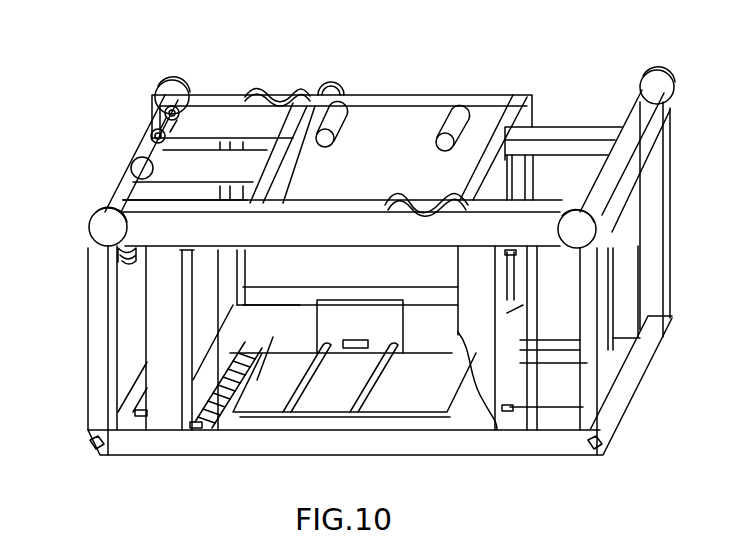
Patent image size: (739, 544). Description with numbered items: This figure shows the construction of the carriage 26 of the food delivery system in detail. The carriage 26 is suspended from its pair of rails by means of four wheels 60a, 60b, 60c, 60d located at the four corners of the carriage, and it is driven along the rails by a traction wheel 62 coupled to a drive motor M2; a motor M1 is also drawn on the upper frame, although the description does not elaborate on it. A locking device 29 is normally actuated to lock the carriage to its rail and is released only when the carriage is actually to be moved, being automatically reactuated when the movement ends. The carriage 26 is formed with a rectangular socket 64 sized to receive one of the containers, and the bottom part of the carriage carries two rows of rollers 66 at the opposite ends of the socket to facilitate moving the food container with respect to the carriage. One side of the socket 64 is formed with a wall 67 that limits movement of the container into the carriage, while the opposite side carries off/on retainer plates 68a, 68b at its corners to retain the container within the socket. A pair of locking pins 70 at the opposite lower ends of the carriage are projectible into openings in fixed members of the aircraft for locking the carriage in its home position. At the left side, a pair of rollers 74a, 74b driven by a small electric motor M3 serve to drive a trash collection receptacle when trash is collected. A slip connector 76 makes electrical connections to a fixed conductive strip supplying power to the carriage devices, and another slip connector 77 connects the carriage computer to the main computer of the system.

The carriage 26 is at (510, 95).
The wheel 60a is at (105, 228).
The wheel 60b is at (183, 78).
The wheel 60c is at (665, 82).
The wheel 60d is at (583, 231).
The locking device 29 is at (116, 261).
The roller 74a is at (148, 138).
The roller 74b is at (152, 102).
The motor M1 is at (447, 107).
The drive motor M2 is at (334, 133).
The electric motor M3 is at (128, 172).
The slip connector 76 is at (260, 94).
The traction wheel 62 is at (345, 90).
The slip connector 77 is at (415, 200).
The retainer plate 68a is at (188, 412).
The retainer plate 68b is at (188, 258).
The wall 67 is at (297, 327).
The rollers 66 is at (452, 397).
The rectangular socket 64 is at (497, 432).
The locking pin 70 is at (591, 452).